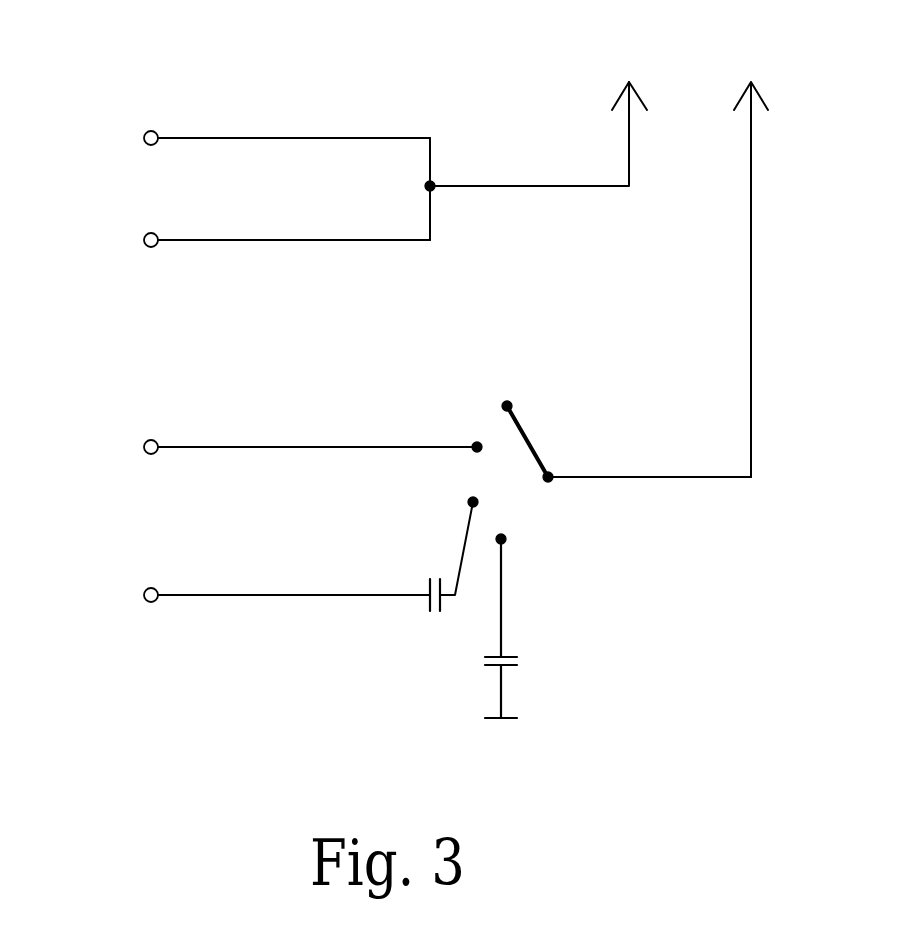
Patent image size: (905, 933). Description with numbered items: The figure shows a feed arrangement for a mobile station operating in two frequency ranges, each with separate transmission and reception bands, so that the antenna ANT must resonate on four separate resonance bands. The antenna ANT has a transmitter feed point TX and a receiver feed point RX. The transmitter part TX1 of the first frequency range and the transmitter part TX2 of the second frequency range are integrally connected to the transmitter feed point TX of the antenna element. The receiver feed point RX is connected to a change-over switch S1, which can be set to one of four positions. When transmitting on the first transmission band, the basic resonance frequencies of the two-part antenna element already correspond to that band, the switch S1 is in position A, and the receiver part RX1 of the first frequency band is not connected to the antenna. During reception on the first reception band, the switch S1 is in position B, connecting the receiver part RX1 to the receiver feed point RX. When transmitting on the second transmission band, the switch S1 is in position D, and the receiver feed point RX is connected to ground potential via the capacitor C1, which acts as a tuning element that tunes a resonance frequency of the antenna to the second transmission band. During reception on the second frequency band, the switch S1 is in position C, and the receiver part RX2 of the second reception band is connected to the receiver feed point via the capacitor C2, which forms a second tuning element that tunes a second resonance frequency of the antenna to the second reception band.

The transmitter part of the first frequency range TX1 is at (242, 139).
The transmitter part of the second frequency range TX2 is at (242, 241).
The receiver part of the first frequency band RX1 is at (266, 446).
The receiver part of the second reception band RX2 is at (242, 594).
The antenna ANT is at (685, 32).
The transmitter feed point TX is at (634, 81).
The receiver feed point RX is at (749, 264).
The change-over switch S1 is at (536, 445).
The switch position A is at (502, 393).
The switch position B is at (468, 434).
The switch position C is at (459, 539).
The switch position D is at (515, 549).
The capacitor C1 is at (519, 662).
The capacitor C2 is at (434, 613).